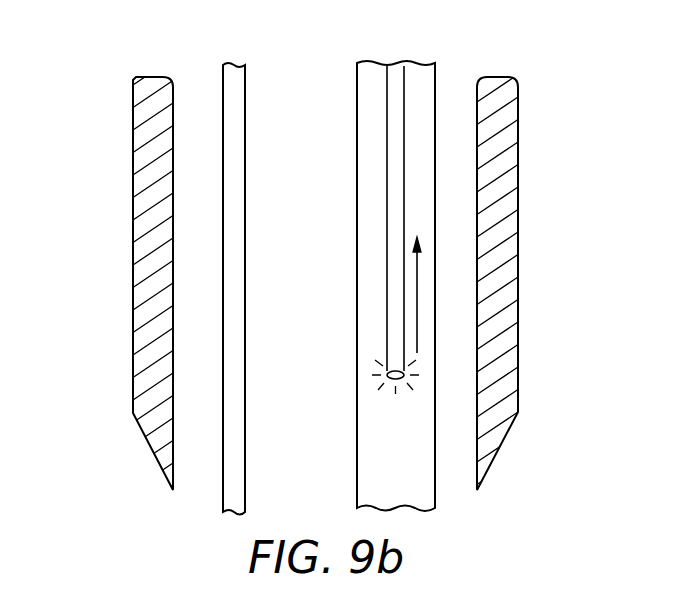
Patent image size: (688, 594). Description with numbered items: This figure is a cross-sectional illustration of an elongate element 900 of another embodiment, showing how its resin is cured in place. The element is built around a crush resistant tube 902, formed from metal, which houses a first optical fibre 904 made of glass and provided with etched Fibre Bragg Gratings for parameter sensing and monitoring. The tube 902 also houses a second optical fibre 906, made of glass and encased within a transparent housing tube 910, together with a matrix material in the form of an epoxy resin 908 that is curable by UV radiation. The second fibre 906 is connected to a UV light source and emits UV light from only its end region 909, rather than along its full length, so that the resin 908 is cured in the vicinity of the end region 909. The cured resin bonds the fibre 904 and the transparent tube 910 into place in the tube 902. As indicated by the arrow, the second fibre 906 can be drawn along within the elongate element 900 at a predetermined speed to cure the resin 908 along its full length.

The elongate element 900 is at (527, 91).
The crush resistant tube 902 is at (133, 105).
The first optical fibre 904 is at (246, 206).
The second optical fibre 906 is at (386, 93).
The matrix material (resin) 908 is at (357, 286).
The end region 909 is at (385, 379).
The transparent housing tube 910 is at (356, 460).